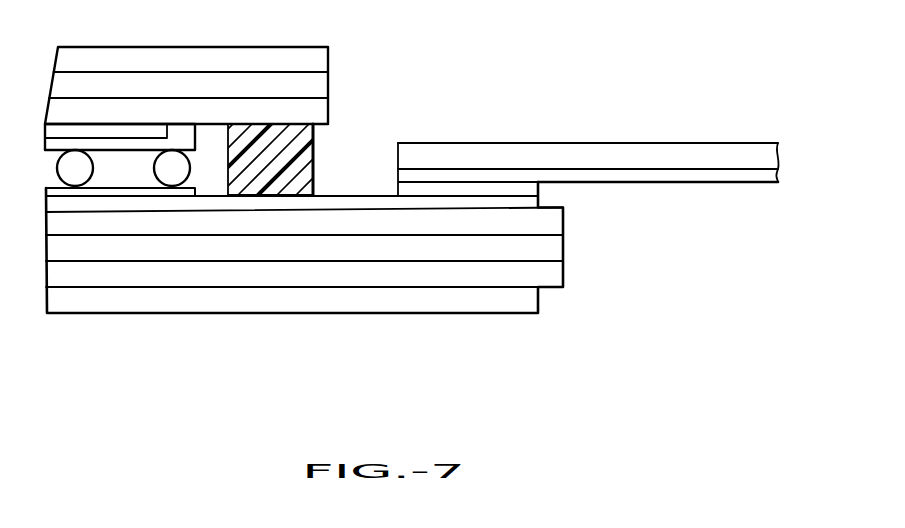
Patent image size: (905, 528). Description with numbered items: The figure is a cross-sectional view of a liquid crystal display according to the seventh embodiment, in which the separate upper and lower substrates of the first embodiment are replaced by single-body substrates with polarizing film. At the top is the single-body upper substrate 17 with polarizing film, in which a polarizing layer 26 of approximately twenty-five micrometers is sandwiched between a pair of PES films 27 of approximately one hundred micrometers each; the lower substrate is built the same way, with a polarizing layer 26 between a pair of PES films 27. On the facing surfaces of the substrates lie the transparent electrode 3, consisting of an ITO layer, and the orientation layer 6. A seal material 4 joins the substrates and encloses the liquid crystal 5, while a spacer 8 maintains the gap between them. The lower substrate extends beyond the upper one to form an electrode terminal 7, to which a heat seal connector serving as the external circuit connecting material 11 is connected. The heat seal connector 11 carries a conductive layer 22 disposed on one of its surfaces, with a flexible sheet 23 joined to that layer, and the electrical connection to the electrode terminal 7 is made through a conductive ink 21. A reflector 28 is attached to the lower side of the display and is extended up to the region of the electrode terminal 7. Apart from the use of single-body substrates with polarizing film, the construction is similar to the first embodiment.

The transparent electrode 3 is at (115, 128).
The seal material 4 is at (300, 160).
The liquid crystal 5 is at (212, 190).
The orientation layer 6 is at (141, 143).
The electrode terminal 7 is at (448, 202).
The spacer 8 is at (170, 166).
The external circuit connecting material 11 is at (722, 143).
The single-body upper substrate with polarizing film 17 is at (281, 47).
The conductive ink 21 is at (505, 188).
The conductive layer 22 is at (730, 178).
The flexible sheet 23 is at (772, 156).
The polarizing layer 26 is at (318, 86).
The PES film 27 is at (318, 60).
The reflector 28 is at (528, 303).